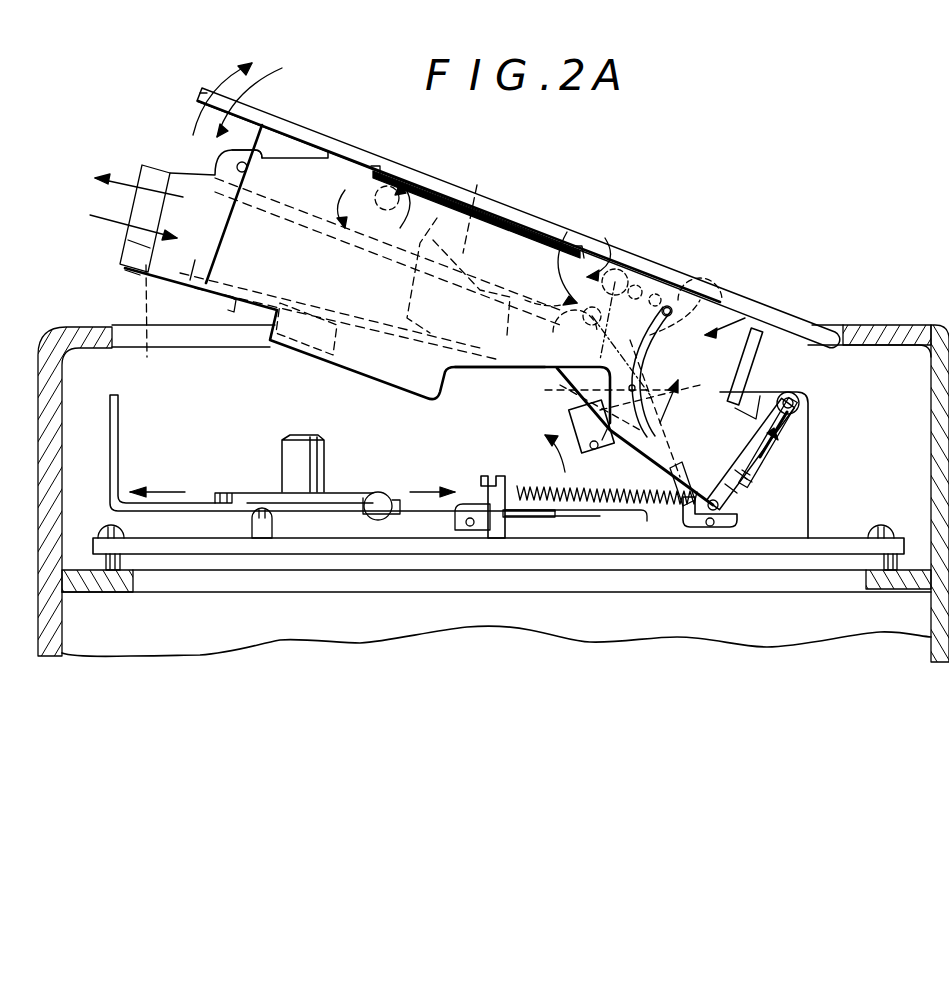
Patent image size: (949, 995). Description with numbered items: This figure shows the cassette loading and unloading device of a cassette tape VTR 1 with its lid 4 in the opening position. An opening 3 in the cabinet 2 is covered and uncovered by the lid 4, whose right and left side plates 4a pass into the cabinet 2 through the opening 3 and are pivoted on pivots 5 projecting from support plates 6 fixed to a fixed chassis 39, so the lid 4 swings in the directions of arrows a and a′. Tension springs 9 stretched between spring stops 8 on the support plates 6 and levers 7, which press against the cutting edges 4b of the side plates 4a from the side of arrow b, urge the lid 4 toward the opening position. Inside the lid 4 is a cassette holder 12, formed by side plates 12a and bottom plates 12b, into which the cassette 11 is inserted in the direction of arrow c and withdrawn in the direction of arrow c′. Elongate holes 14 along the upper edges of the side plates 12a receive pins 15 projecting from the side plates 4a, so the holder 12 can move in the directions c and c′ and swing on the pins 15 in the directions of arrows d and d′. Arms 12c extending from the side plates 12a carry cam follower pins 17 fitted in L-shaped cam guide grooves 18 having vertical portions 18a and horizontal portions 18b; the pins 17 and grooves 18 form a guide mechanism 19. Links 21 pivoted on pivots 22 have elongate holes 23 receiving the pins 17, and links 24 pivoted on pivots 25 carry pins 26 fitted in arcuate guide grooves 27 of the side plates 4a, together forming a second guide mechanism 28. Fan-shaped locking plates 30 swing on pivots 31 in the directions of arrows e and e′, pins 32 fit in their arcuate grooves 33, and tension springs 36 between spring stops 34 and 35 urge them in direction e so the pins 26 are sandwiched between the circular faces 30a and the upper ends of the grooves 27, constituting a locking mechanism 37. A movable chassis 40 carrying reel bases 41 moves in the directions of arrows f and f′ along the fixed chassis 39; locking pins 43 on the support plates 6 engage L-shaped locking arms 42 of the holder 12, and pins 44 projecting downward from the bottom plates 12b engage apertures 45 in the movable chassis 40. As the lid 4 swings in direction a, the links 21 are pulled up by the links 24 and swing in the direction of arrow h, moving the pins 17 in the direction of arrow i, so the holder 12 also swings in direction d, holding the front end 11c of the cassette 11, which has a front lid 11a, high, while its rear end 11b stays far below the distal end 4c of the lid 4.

The VTR 1 is at (845, 278).
The cabinet 2 is at (893, 338).
The opening 3 is at (112, 330).
The lid 4 is at (516, 218).
The side plates 4a is at (553, 228).
The cutting edges 4b is at (772, 452).
The distal end 4c is at (203, 93).
The pivots 5 is at (800, 400).
The support plates 6 is at (800, 485).
The levers 7 is at (760, 458).
The spring stops 8 is at (528, 520).
The tension springs 9 is at (605, 518).
The cassette 11 is at (115, 200).
The front lid 11a is at (474, 195).
The rear end 11b is at (128, 240).
The front end 11c is at (494, 367).
The cassette holder 12 is at (215, 165).
The side plates 12a is at (195, 262).
The bottom plates 12b is at (139, 322).
The arms 12c is at (580, 412).
The elongate holes 14 is at (252, 168).
The pins 15 is at (392, 185).
The cam follower pins 17 is at (672, 438).
The cam guide grooves 18 is at (676, 460).
The vertical portions 18a is at (705, 508).
The horizontal portions 18b is at (712, 530).
The guide mechanism 19 is at (740, 406).
The links 21 is at (520, 480).
The pivots 22 is at (466, 530).
The elongate holes 23 is at (705, 395).
The links 24 is at (575, 432).
The pivots 25 is at (607, 482).
The pins 26 is at (690, 275).
The arcuate guide grooves 27 is at (652, 353).
The second guide mechanism 28 is at (735, 290).
The locking plates 30 is at (590, 328).
The circular faces 30a is at (618, 270).
The pivots 31 is at (580, 384).
The pins 32 is at (575, 328).
The arcuate grooves 33 is at (648, 262).
The spring stops 34 is at (636, 262).
The spring stops 35 is at (718, 290).
The tension springs 36 is at (690, 290).
The locking mechanism 37 is at (520, 274).
The fixed chassis 39 is at (228, 554).
The movable chassis 40 is at (178, 511).
The reel bases 41 is at (320, 455).
The locking arms 42 is at (272, 342).
The locking pins 43 is at (378, 520).
The pins 44 is at (232, 318).
The apertures 45 is at (226, 492).
The arrow a is at (232, 78).
The arrow a′ is at (272, 78).
The arrow b is at (780, 437).
The arrow c is at (92, 215).
The arrow c′ is at (125, 173).
The arrow d is at (340, 210).
The arrow d′ is at (420, 195).
The arrow e is at (555, 255).
The arrow e′ is at (601, 245).
The arrow f is at (165, 490).
The arrow f′ is at (425, 490).
The arrow h is at (548, 450).
The arrow i is at (668, 387).